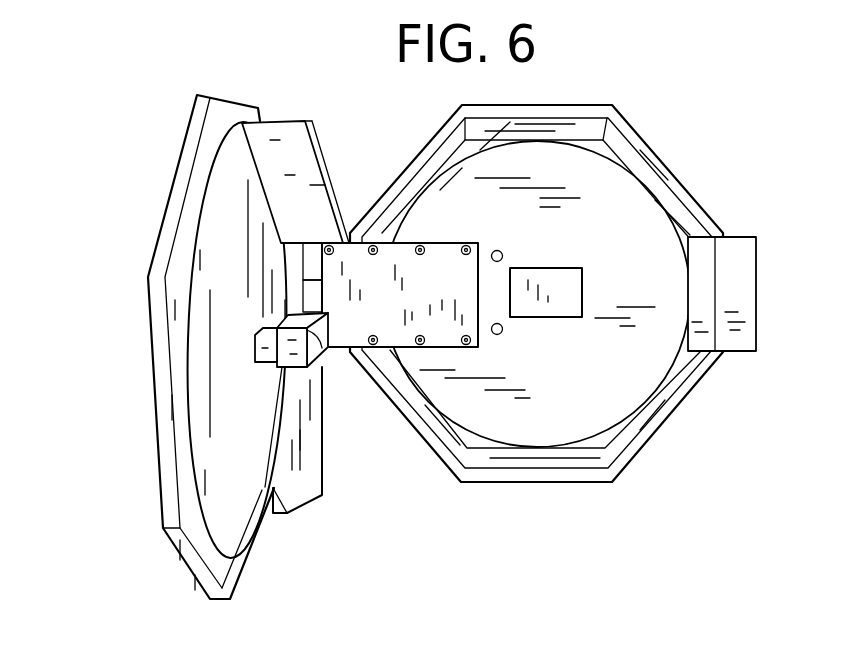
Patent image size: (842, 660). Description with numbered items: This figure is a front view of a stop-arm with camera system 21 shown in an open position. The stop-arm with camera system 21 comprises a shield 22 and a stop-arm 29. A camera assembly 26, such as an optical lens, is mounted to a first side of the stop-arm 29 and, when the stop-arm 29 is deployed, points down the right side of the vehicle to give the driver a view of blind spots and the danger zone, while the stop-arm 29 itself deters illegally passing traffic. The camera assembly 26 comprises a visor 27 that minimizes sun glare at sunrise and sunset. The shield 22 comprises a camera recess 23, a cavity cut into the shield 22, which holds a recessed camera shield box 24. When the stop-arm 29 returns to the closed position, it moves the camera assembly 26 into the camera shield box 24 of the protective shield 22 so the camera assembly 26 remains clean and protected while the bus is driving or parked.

The stop-arm with camera system 21 is at (92, 183).
The shield 22 is at (575, 165).
The camera recess 23 is at (572, 287).
The camera shield box 24 is at (548, 317).
The camera assembly 26 is at (338, 486).
The visor 27 is at (325, 372).
The stop-arm 29 is at (293, 277).